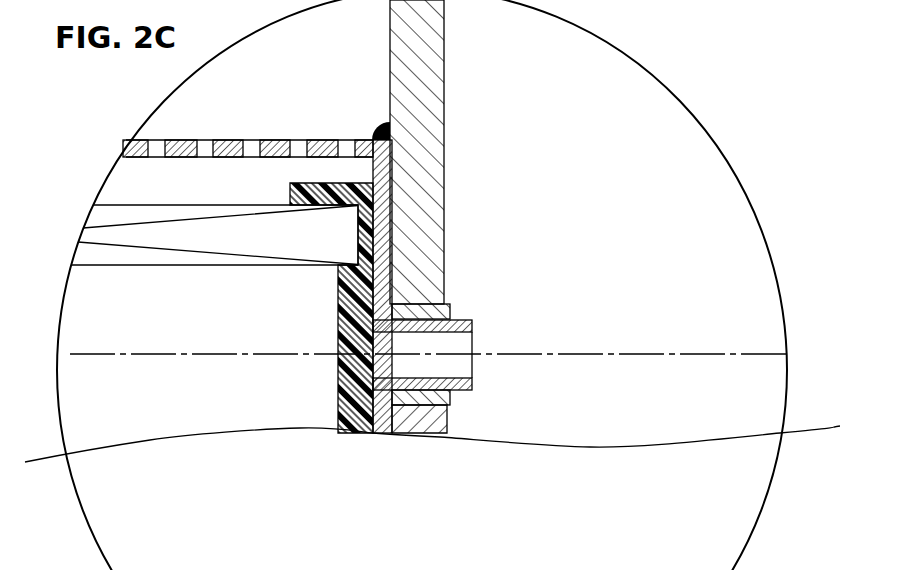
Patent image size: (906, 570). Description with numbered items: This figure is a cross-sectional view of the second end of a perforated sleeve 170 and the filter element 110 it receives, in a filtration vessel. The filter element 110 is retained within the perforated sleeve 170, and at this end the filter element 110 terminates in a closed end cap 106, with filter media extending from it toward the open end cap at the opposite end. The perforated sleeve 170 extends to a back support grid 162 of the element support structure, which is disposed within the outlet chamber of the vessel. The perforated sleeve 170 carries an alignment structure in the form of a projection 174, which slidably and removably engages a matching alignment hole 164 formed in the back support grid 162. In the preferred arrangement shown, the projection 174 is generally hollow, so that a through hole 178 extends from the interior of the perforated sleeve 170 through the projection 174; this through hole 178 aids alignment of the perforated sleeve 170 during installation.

The closed end cap 106 is at (340, 395).
The filter element 110 is at (192, 258).
The back support grid 162 is at (438, 48).
The alignment hole 164 is at (422, 400).
The perforated sleeve 170 is at (325, 138).
The projection 174 is at (473, 325).
The through hole 178 is at (465, 345).